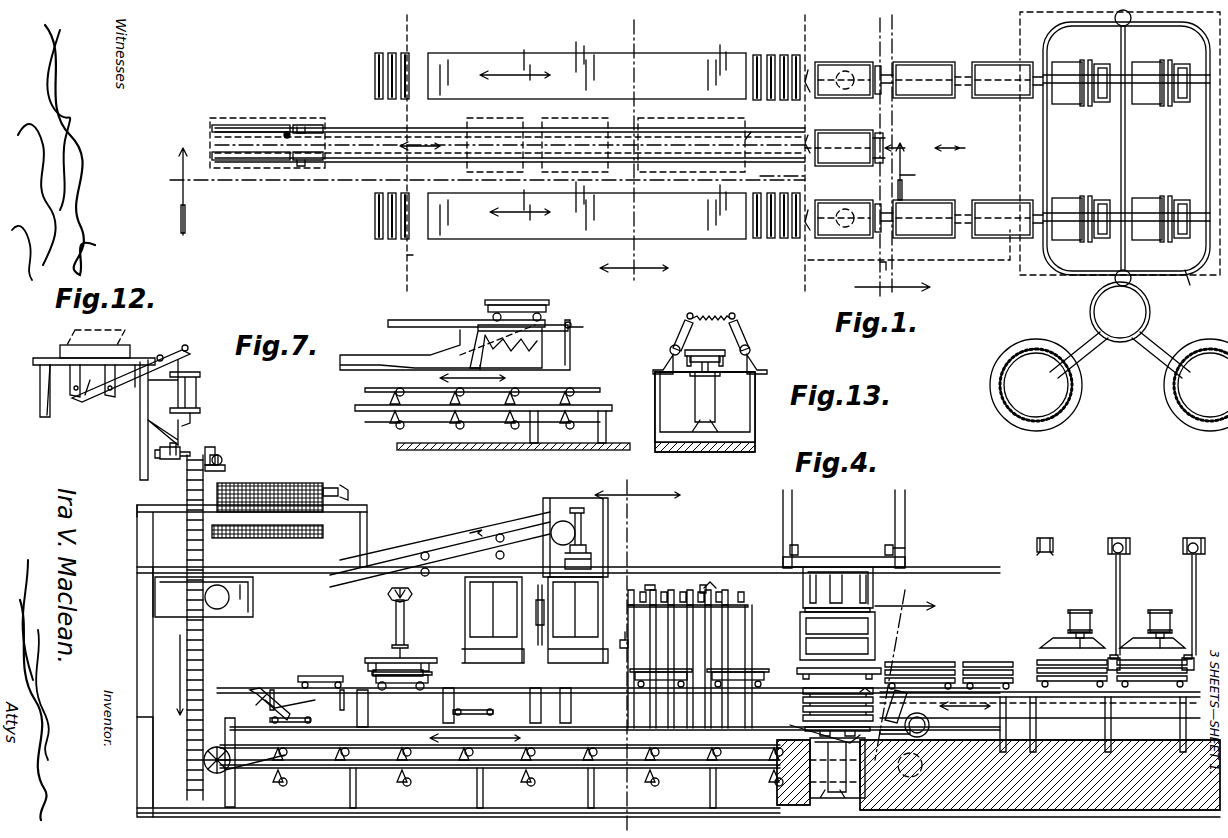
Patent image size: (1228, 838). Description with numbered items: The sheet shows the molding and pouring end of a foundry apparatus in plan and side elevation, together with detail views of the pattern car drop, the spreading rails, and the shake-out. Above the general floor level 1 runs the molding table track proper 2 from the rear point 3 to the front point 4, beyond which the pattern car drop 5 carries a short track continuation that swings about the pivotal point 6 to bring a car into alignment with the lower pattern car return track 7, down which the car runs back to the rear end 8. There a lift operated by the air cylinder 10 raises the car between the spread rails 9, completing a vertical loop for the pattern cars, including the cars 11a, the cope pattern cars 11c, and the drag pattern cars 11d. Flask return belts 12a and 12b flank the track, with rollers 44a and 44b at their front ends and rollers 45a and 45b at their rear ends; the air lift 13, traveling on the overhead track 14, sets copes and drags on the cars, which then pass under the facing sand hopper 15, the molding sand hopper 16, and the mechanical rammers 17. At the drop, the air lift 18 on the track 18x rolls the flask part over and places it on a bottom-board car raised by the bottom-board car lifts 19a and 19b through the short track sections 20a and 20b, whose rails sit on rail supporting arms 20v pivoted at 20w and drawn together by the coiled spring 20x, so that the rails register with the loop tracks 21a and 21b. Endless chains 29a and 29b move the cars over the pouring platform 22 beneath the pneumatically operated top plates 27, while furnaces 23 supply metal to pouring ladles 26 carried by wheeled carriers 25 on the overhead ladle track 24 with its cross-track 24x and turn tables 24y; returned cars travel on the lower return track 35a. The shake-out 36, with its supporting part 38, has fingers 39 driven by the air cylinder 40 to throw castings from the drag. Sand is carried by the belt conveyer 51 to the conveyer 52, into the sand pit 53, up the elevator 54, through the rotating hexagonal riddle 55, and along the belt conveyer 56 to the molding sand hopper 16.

In FIG. 4, the general floor level 1 is at (810, 720).
In FIG. 1, the molding table track proper 2 is at (384, 128).
In FIG. 7, the molding table track proper 2 is at (435, 320).
In FIG. 4, the molding table track proper 2 is at (775, 678).
In FIG. 1, the rear end point of track 3 is at (372, 162).
In FIG. 4, the rear end point of track 3 is at (365, 690).
In FIG. 1, the front end point of track 4 is at (673, 226).
In FIG. 7, the front end point of track 4 is at (470, 303).
In FIG. 4, the front end point of track 4 is at (793, 650).
In FIG. 1, the pattern car drop 5 is at (815, 128).
In FIG. 7, the pattern car drop 5 is at (562, 330).
In FIG. 4, the pattern car drop 5 is at (800, 670).
In FIG. 1, the pivotal point 6 is at (883, 138).
In FIG. 7, the pivotal point 6 is at (572, 325).
In FIG. 1, the lower pattern car return track 7 is at (842, 171).
In FIG. 7, the lower pattern car return track 7 is at (445, 348).
In FIG. 4, the lower pattern car return track 7 is at (717, 711).
In FIG. 1, the rear end of return track 8 is at (634, 150).
In FIG. 4, the rear end of return track 8 is at (637, 652).
In FIG. 1, the rails 9 is at (332, 168).
In FIG. 4, the rails 9 is at (287, 688).
In FIG. 4, the air cylinder 10 is at (253, 692).
In FIG. 4, the car 11a is at (743, 662).
In FIG. 7, the cope pattern car 11c is at (515, 305).
In FIG. 4, the cope pattern car 11c is at (559, 714).
In FIG. 4, the drag pattern car 11d is at (325, 676).
In FIG. 1, the flask return belt 12a is at (587, 210).
In FIG. 1, the flask return belt 12b is at (587, 70).
In FIG. 4, the air lift 13 is at (818, 803).
In FIG. 1, the overhead track 14 is at (418, 257).
In FIG. 4, the overhead track 14 is at (390, 587).
In FIG. 1, the facing sand hopper 15 is at (500, 110).
In FIG. 4, the facing sand hopper 15 is at (493, 620).
In FIG. 1, the molding sand hopper 16 is at (578, 110).
In FIG. 4, the molding sand hopper 16 is at (565, 567).
In FIG. 1, the mechanical rammers 17 is at (693, 110).
In FIG. 4, the mechanical rammers 17 is at (665, 603).
In FIG. 4, the air lift 18 is at (844, 608).
In FIG. 1, the track 18x is at (892, 276).
In FIG. 4, the track 18x is at (907, 540).
In FIG. 1, the bottom-board car lift 19a is at (878, 232).
In FIG. 7, the bottom-board car lift 19a is at (605, 395).
In FIG. 13, the bottom-board car lift 19a is at (680, 395).
In FIG. 4, the bottom-board car lift 19a is at (850, 765).
In FIG. 1, the bottom-board car lift 19b is at (878, 66).
In FIG. 1, the short track section 20a is at (874, 182).
In FIG. 13, the short track section 20a is at (740, 305).
In FIG. 4, the short track section 20a is at (868, 688).
In FIG. 1, the short track section 20b is at (886, 95).
In FIG. 13, the rail supporting arms 20v is at (757, 332).
In FIG. 4, the rail supporting arms 20v is at (895, 690).
In FIG. 13, the pivot 20w is at (764, 354).
In FIG. 4, the pivot 20w is at (925, 718).
In FIG. 1, the coiled spring 20x is at (828, 62).
In FIG. 13, the coiled spring 20x is at (712, 303).
In FIG. 1, the bottom-board car loop track 21a is at (970, 188).
In FIG. 4, the bottom-board car loop track 21a is at (960, 662).
In FIG. 1, the bottom-board car loop track 21b is at (965, 62).
In FIG. 1, the pouring platform 22 is at (1030, 122).
In FIG. 1, the furnaces or cupolas 23 is at (1109, 356).
In FIG. 1, the overhead ladle track 24 is at (1198, 180).
In FIG. 4, the overhead ladle track 24 is at (1196, 528).
In FIG. 1, the cross-track 24x is at (1125, 135).
In FIG. 4, the cross-track 24x is at (1118, 538).
In FIG. 1, the turn tables 24y is at (1138, 264).
In FIG. 4, the wheeled carriers 25 is at (1191, 565).
In FIG. 4, the pouring ladles 26 is at (1193, 647).
In FIG. 1, the pneumatically operated top plates 27 is at (1121, 151).
In FIG. 4, the pneumatically operated top plates 27 is at (1136, 628).
In FIG. 1, the endless chain 29a is at (991, 237).
In FIG. 4, the endless chain 29a is at (1145, 690).
In FIG. 1, the endless chain 29b is at (996, 99).
In FIG. 4, the lower bottom-board car return track 35a is at (1075, 730).
In FIG. 12, the shake-out 36 is at (40, 358).
In FIG. 12, the bracket 38 is at (62, 439).
In FIG. 12, the fingers 39 is at (89, 398).
In FIG. 12, the air cylinder 40 is at (200, 398).
In FIG. 1, the rollers 44a is at (762, 240).
In FIG. 1, the rollers 44b is at (785, 44).
In FIG. 1, the rollers 45a is at (381, 240).
In FIG. 1, the rollers 45b is at (388, 52).
In FIG. 1, the belt conveyer 51 is at (1126, 148).
In FIG. 4, the belt conveyer 51 is at (1035, 660).
In FIG. 1, the conveyer 52 is at (756, 119).
In FIG. 7, the conveyer 52 is at (440, 395).
In FIG. 4, the conveyer 52 is at (738, 770).
In FIG. 4, the sand pit 53 is at (222, 763).
In FIG. 4, the elevator 54 is at (203, 640).
In FIG. 1, the rotating hexagonal riddle 55 is at (278, 117).
In FIG. 4, the rotating hexagonal riddle 55 is at (280, 483).
In FIG. 4, the belt conveyer 56 is at (435, 545).